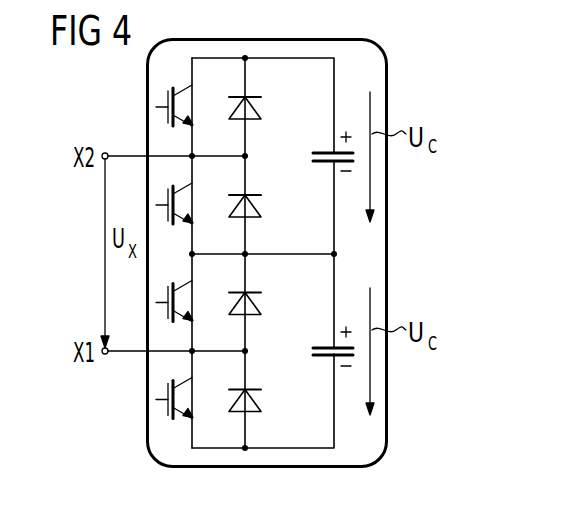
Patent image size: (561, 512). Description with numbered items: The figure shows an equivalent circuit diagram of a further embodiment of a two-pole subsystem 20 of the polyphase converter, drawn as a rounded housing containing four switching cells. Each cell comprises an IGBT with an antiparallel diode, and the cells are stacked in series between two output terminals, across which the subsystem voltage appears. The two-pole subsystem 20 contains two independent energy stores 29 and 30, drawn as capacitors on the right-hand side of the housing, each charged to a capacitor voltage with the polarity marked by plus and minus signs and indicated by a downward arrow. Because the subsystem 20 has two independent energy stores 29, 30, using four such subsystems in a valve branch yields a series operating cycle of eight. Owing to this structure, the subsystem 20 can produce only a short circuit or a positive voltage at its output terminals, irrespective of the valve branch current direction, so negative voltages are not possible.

The two-pole subsystem 20 is at (386, 75).
The independent energy store 29 is at (320, 163).
The independent energy store 30 is at (320, 357).